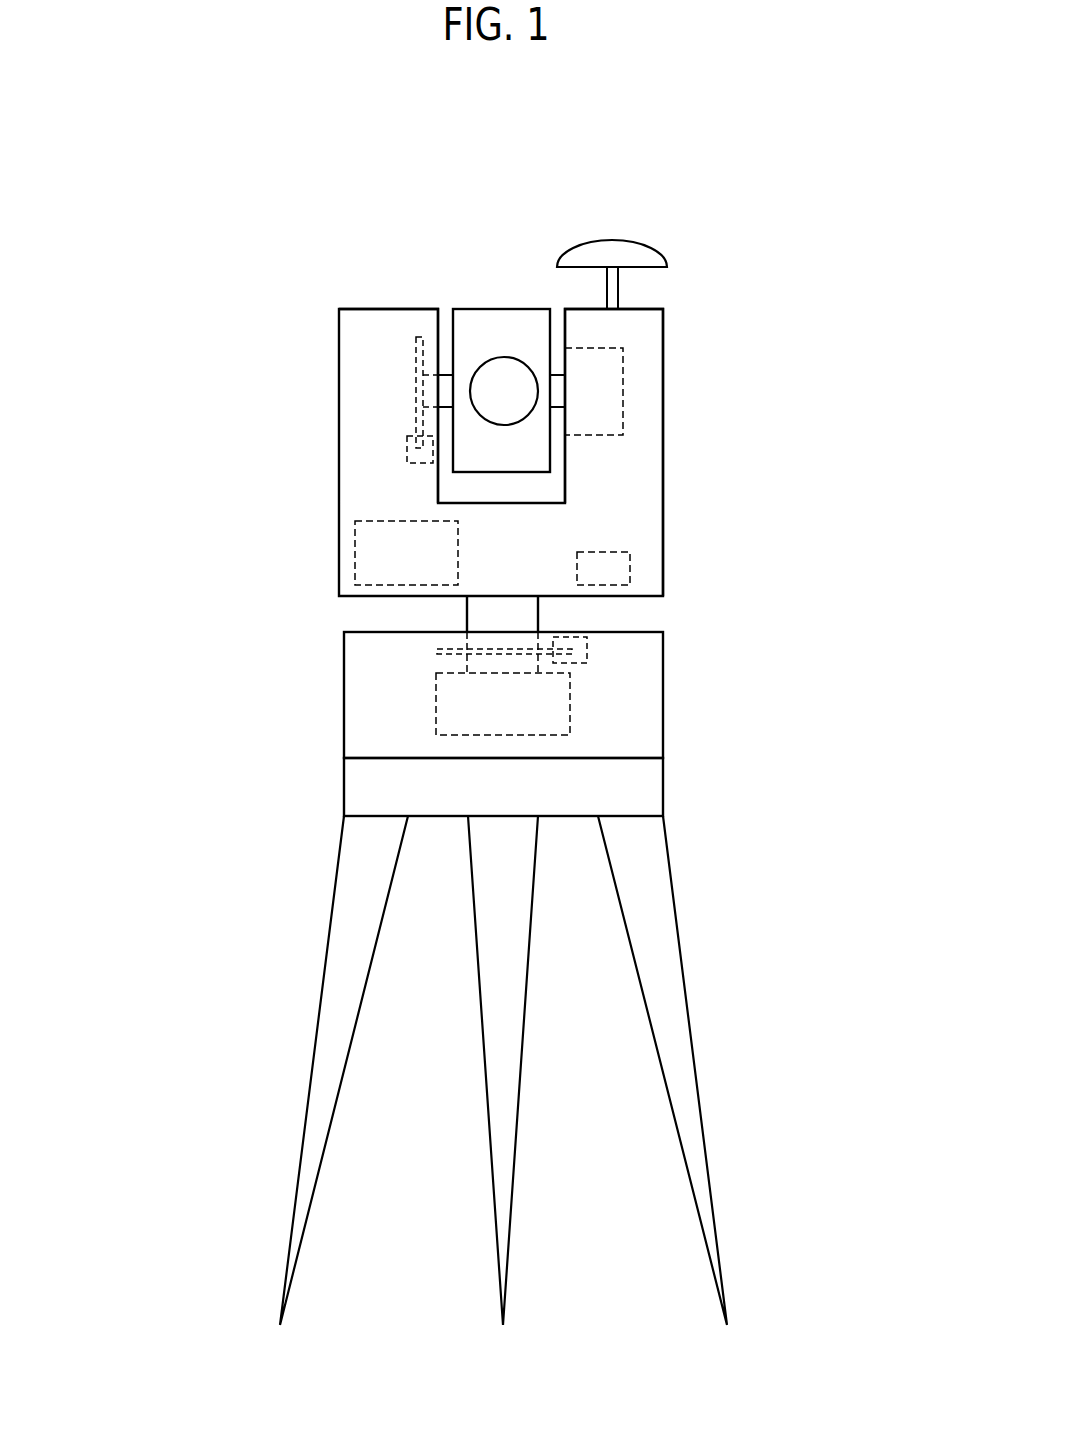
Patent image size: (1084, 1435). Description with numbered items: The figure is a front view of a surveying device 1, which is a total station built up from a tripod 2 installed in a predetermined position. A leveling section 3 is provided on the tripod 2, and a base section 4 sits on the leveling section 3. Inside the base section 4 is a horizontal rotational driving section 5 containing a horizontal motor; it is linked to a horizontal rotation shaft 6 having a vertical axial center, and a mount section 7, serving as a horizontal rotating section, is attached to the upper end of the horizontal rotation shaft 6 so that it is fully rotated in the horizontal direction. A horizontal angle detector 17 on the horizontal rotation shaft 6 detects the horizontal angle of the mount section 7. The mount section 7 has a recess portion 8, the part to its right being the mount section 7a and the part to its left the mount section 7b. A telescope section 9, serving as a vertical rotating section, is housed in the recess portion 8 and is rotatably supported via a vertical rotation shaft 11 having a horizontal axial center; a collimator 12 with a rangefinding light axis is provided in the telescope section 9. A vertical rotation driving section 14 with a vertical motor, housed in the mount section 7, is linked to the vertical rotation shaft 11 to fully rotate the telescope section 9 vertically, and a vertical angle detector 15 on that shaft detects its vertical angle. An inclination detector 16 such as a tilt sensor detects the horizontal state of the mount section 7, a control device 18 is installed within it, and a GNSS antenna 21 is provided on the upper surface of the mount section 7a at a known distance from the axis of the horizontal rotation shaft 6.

The surveying device 1 is at (796, 181).
The tripod 2 is at (672, 890).
The leveling section 3 is at (663, 775).
The base section 4 is at (663, 703).
The horizontal rotational driving section 5 is at (570, 690).
The horizontal rotation shaft 6 is at (538, 608).
The mount section 7 is at (683, 453).
The mount section 7a is at (663, 330).
The mount section 7b is at (339, 367).
The recess portion 8 is at (549, 334).
The telescope section 9 is at (497, 309).
The vertical rotation shaft 11 is at (447, 373).
The collimator 12 is at (493, 358).
The vertical rotation driving section 14 is at (623, 392).
The vertical angle detector 15 is at (385, 432).
The inclination detector 16 is at (630, 568).
The horizontal angle detector 17 is at (400, 668).
The control device 18 is at (355, 543).
The GNSS antenna 21 is at (628, 240).